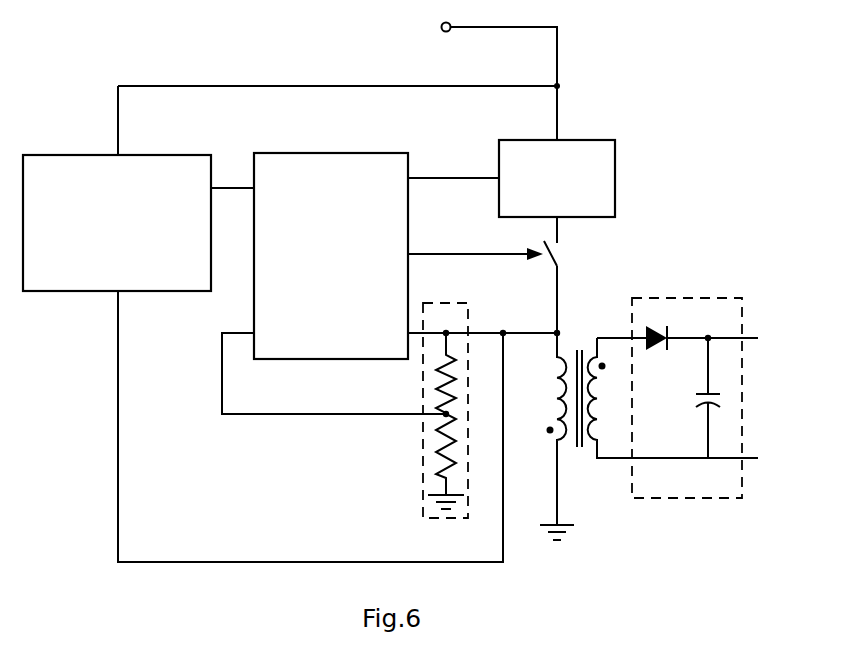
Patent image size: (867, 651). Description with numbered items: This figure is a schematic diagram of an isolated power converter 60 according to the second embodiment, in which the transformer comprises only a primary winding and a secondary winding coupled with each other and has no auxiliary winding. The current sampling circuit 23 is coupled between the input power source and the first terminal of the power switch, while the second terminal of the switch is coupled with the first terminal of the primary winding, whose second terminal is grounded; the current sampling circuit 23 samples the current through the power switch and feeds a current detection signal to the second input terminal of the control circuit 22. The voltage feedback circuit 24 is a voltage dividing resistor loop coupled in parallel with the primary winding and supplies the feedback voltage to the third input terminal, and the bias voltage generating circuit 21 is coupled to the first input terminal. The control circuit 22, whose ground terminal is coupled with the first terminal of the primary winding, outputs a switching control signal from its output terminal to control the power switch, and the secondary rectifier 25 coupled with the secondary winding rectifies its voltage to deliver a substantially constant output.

The isolated power converter 60 is at (60, 22).
The bias voltage generating circuit 21 is at (129, 234).
The control circuit 22 is at (311, 153).
The current sampling circuit 23 is at (568, 189).
The voltage feedback circuit 24 is at (423, 466).
The secondary rectifier 25 is at (681, 298).